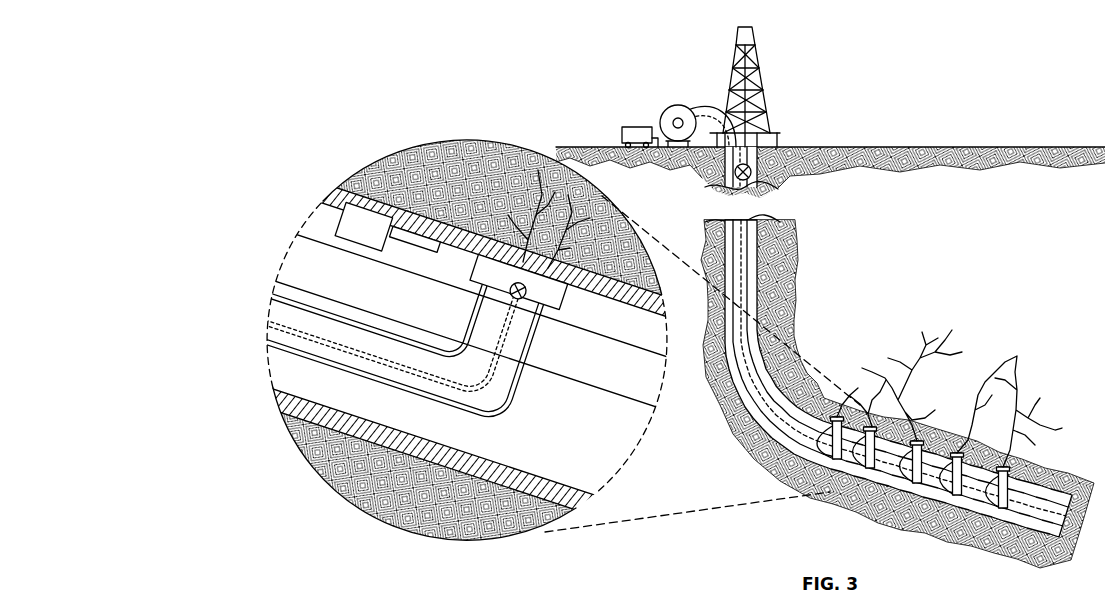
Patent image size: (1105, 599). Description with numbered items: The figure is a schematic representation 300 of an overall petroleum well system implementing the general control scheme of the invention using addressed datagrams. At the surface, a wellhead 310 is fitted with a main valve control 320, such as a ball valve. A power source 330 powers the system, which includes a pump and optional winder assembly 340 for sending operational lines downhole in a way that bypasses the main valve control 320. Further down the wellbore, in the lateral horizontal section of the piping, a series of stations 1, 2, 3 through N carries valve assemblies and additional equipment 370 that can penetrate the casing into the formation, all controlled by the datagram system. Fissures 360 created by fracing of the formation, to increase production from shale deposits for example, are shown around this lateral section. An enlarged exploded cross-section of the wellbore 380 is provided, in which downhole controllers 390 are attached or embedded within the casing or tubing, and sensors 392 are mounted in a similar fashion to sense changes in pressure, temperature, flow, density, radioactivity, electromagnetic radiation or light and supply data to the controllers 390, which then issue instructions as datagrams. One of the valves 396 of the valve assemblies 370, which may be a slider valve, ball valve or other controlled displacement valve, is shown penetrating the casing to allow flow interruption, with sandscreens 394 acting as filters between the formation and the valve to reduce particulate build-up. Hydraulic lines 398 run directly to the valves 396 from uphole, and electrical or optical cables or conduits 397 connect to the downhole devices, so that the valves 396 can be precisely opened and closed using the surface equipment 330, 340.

The schematic representation 300 is at (936, 40).
The wellhead 310 is at (753, 42).
The main valve control 320 is at (752, 177).
The power source 330 is at (631, 126).
The pump and winder assembly 340 is at (677, 105).
The fissures 360 is at (918, 336).
The valve assemblies 370 is at (868, 412).
The wellbore 380 is at (830, 498).
The downhole controllers 390 is at (340, 225).
The sensors 392 is at (428, 250).
The sandscreens 394 is at (510, 195).
The valve assemblies 396 is at (515, 306).
The electrical and/or optical cables or conduits 397 is at (270, 318).
The hydraulic lines 398 is at (270, 292).
The first valve assembly of the series 1 is at (840, 475).
The second valve assembly of the series 2 is at (871, 492).
The third valve assembly of the series 3 is at (914, 508).
The nth valve assembly of the series N is at (1018, 470).